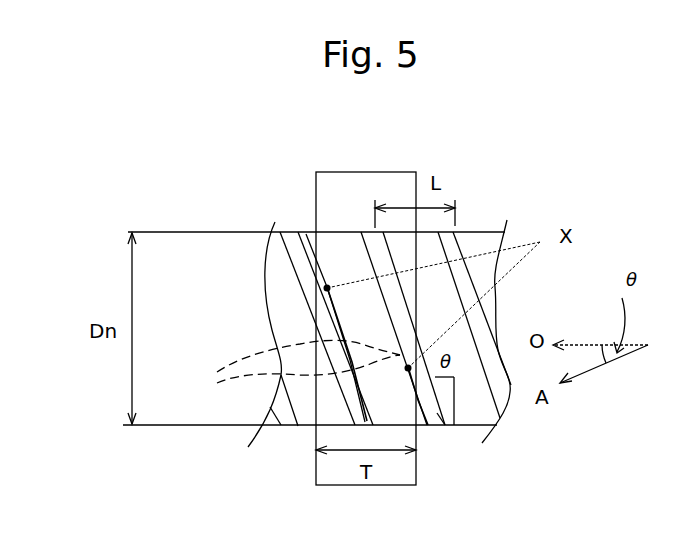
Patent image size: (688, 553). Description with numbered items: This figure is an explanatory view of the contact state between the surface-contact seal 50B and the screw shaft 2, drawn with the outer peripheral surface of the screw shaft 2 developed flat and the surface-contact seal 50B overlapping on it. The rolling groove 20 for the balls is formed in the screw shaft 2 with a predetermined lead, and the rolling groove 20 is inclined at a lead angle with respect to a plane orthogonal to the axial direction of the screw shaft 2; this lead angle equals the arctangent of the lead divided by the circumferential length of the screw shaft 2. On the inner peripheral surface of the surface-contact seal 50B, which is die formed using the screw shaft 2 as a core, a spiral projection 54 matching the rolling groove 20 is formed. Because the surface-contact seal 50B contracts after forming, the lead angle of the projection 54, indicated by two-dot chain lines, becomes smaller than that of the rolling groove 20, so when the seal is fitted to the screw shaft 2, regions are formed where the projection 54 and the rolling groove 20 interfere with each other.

The screw shaft 2 is at (482, 225).
The rolling groove 20 is at (293, 232).
The surface-contact seal 50B is at (368, 175).
The projection 54 is at (290, 367).